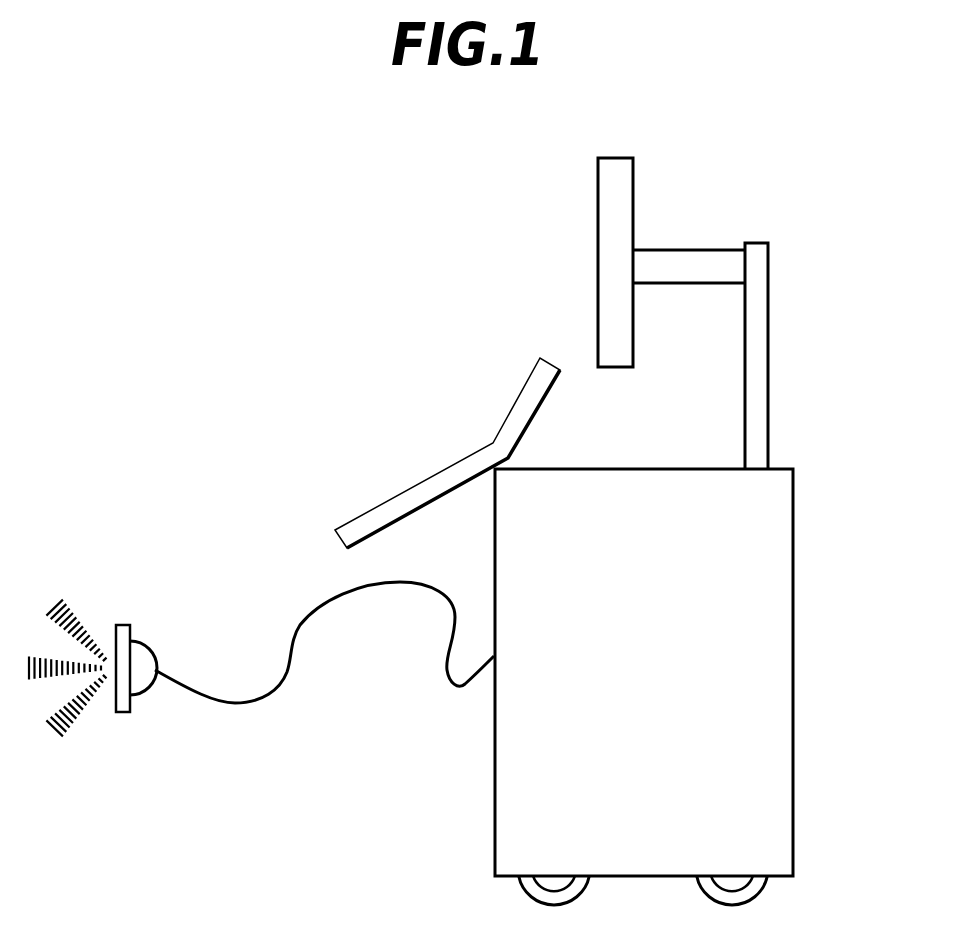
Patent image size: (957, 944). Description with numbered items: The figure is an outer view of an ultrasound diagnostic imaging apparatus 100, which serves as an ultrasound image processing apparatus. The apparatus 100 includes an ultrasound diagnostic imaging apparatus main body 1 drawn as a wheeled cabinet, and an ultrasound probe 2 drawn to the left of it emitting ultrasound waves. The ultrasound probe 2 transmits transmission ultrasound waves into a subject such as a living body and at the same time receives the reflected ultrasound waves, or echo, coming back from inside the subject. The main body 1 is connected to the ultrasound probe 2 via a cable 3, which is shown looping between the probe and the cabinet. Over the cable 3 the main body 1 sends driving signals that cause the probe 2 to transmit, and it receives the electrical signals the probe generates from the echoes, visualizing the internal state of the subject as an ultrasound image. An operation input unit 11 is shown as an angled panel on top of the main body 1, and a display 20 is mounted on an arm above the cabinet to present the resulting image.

The ultrasound diagnostic imaging apparatus 100 is at (212, 199).
The ultrasound diagnostic imaging apparatus main body 1 is at (795, 673).
The display 20 is at (597, 222).
The operation input unit 11 is at (513, 405).
The ultrasound probe 2 is at (131, 632).
The cable 3 is at (288, 670).